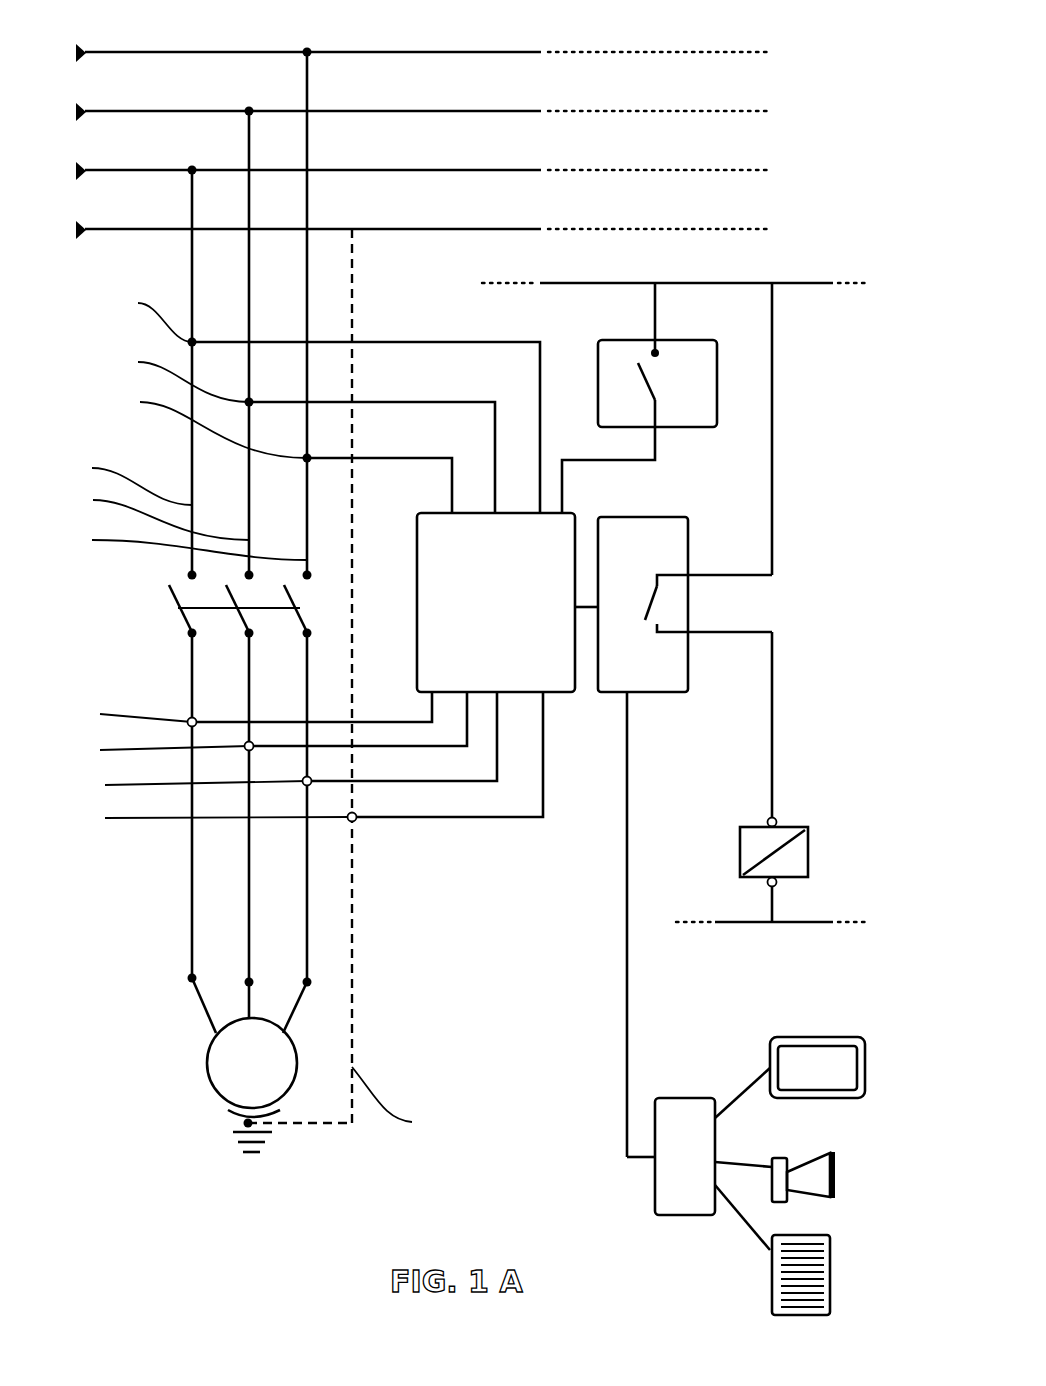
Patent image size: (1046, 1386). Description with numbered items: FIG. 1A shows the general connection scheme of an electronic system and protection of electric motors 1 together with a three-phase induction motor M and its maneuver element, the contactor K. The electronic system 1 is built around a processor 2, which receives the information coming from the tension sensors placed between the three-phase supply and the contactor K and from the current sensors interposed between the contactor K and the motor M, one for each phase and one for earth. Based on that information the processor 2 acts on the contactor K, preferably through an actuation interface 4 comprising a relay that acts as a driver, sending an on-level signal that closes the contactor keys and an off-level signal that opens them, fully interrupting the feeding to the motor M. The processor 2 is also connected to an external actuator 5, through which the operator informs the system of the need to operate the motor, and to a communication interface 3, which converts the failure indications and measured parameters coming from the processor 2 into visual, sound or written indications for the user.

The electronic system and protection of electric motors 1 is at (806, 35).
The processor 2 is at (507, 602).
The communication interface 3 is at (746, 1176).
The actuation interface 4 is at (685, 837).
The external actuator 5 is at (700, 352).